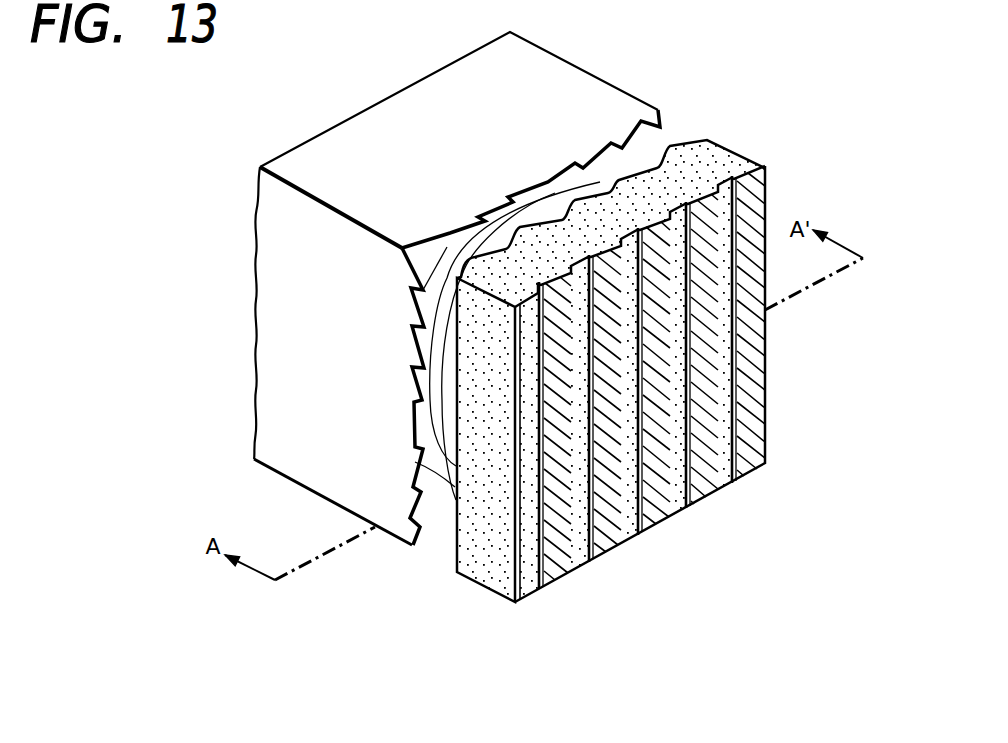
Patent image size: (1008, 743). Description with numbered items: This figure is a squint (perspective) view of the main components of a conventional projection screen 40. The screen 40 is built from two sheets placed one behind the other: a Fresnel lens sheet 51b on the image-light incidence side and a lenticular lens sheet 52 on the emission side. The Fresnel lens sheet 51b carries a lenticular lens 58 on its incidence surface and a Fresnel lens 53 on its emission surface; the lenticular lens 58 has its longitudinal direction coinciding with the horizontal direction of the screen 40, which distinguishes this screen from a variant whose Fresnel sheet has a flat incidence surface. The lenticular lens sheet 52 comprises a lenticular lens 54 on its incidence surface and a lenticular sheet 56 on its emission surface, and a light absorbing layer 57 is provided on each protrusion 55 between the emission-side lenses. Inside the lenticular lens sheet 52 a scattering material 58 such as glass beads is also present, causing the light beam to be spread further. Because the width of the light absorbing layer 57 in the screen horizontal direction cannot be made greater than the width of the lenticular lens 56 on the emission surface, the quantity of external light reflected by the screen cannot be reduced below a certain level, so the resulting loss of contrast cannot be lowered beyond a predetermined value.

The screen 40 is at (310, 597).
The Fresnel lens sheet 51b is at (395, 530).
The lenticular lens sheet 52 is at (475, 587).
The Fresnel lens 53 is at (415, 462).
The lenticular lens 54 is at (677, 137).
The protrusion 55 is at (729, 186).
The lenticular sheet 56 is at (722, 208).
The light absorbing layer 57 is at (752, 347).
The lenticular lens 58 is at (382, 100).